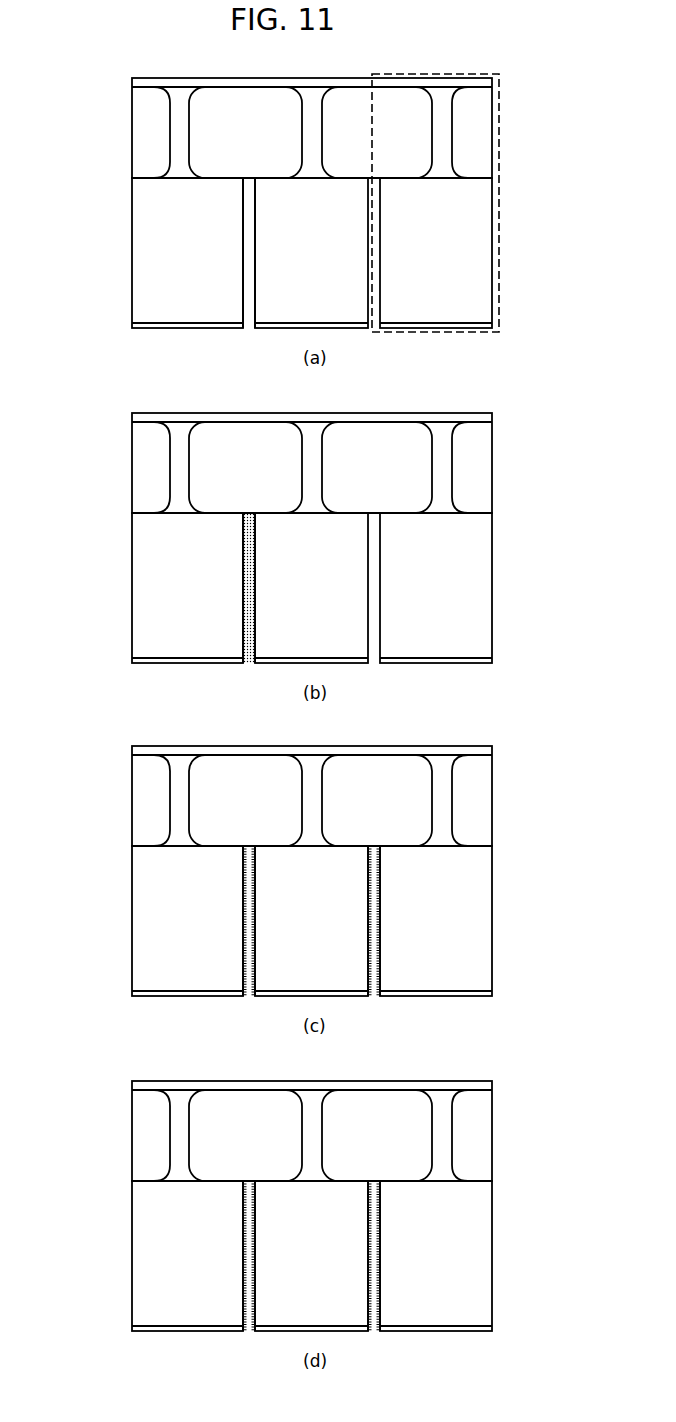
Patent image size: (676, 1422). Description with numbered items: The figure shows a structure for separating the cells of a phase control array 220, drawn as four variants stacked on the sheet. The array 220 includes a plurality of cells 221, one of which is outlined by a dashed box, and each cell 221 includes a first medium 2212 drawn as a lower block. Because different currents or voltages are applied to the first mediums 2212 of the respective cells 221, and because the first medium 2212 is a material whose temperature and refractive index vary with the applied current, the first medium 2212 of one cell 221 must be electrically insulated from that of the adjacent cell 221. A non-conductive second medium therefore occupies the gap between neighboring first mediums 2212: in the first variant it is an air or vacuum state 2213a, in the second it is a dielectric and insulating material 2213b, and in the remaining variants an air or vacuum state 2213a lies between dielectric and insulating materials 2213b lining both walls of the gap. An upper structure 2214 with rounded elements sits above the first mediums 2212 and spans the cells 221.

The phase control array 220 is at (82, 65).
The cell 221 is at (500, 200).
The light emitting element layer 2214 is at (150, 137).
The air or vacuum state 2213a is at (248, 214).
The dielectric and insulating material 2213b is at (250, 550).
The first medium 2212 is at (150, 271).